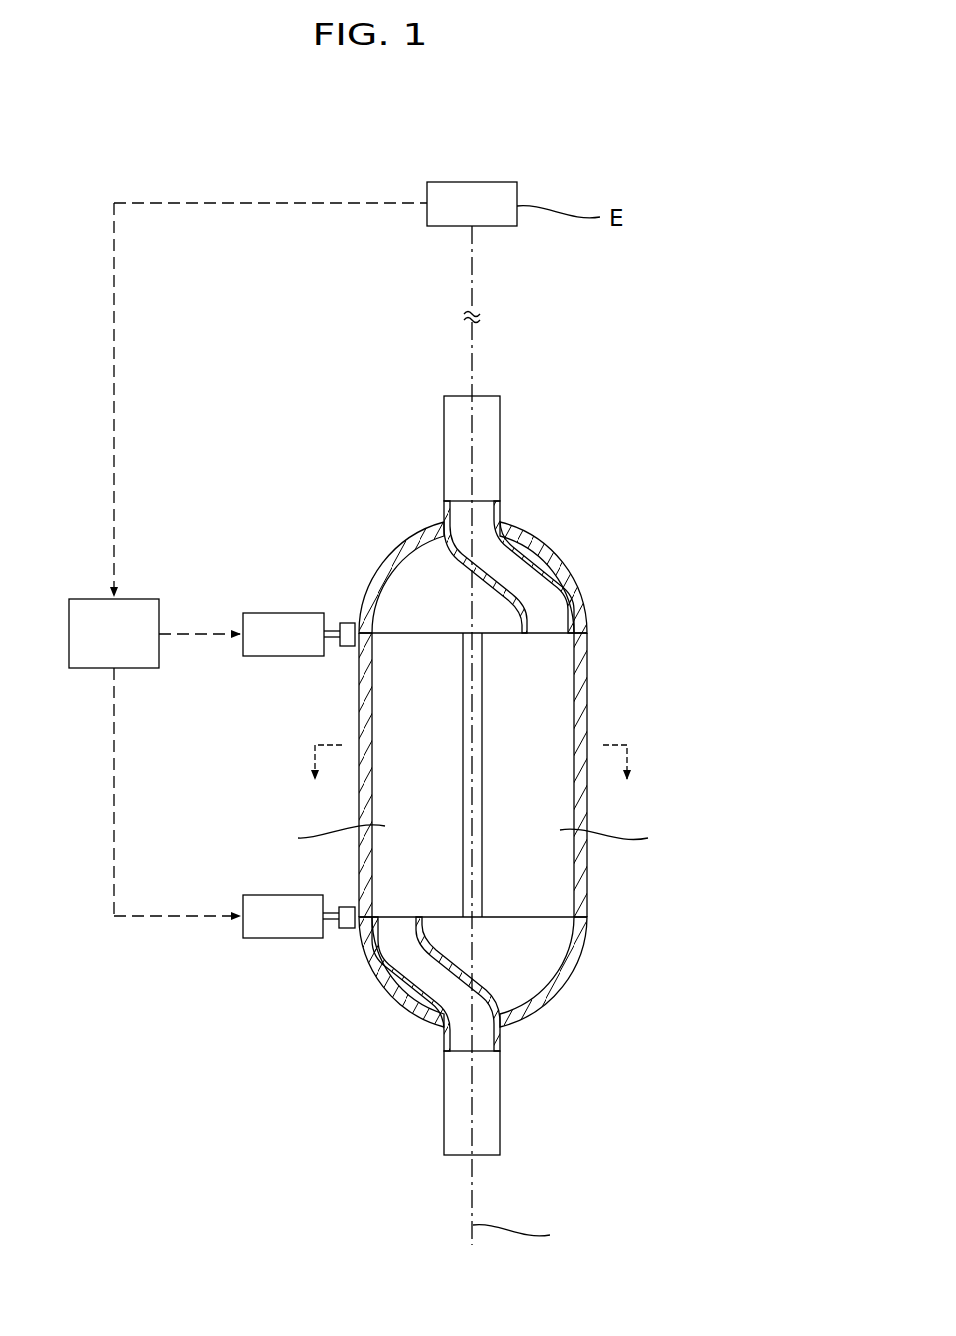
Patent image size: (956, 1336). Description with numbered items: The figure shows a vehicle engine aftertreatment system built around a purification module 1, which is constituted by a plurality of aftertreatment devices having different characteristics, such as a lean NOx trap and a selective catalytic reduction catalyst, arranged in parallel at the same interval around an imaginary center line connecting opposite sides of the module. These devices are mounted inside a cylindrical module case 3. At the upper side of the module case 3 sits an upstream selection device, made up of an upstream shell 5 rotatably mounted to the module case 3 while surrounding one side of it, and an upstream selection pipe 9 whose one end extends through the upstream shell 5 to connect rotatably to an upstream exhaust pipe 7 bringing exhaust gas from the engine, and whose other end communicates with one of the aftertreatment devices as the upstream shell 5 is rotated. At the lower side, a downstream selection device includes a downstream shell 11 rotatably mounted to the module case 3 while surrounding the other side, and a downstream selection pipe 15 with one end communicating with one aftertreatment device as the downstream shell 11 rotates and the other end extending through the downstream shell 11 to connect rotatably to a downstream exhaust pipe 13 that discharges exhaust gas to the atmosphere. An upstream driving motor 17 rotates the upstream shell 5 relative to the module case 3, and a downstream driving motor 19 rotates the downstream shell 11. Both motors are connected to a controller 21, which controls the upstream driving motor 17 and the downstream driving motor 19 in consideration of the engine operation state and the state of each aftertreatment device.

The purification module 1 is at (608, 902).
The module case 3 is at (587, 694).
The upstream shell 5 is at (405, 547).
The upstream exhaust pipe 7 is at (494, 432).
The upstream selection pipe 9 is at (537, 577).
The downstream shell 11 is at (555, 992).
The downstream exhaust pipe 13 is at (495, 1120).
The downstream selection pipe 15 is at (410, 975).
The upstream driving motor 17 is at (280, 613).
The downstream driving motor 19 is at (270, 938).
The controller 21 is at (80, 599).